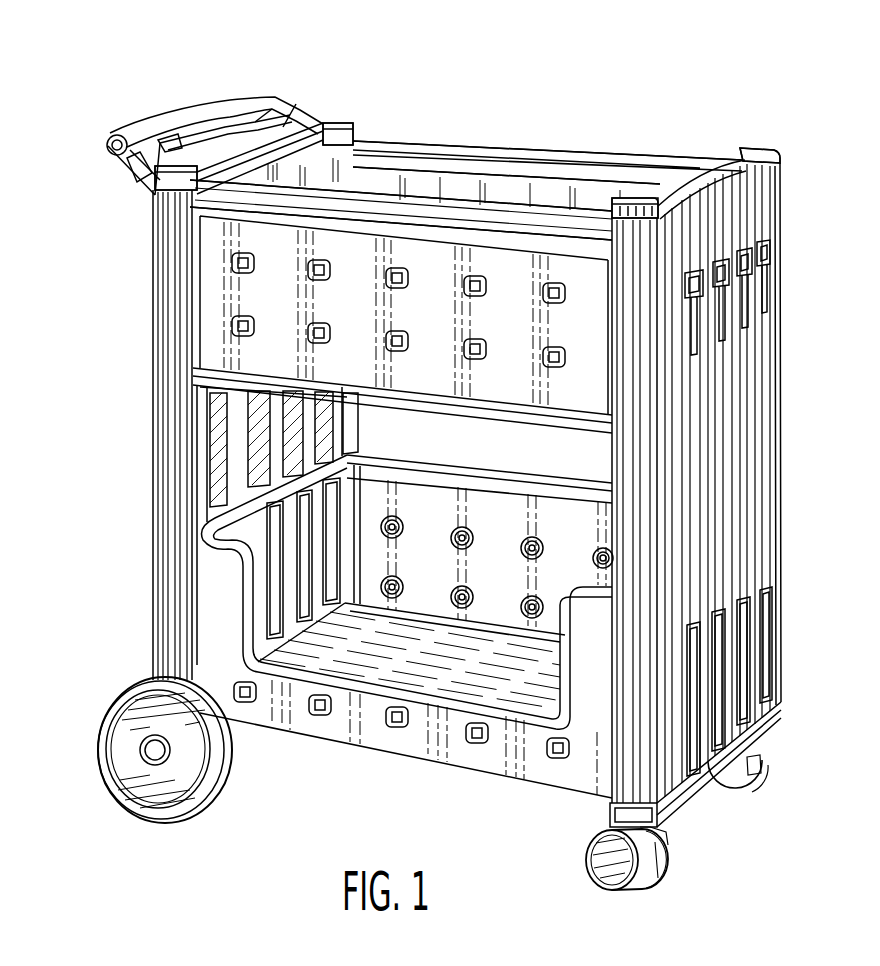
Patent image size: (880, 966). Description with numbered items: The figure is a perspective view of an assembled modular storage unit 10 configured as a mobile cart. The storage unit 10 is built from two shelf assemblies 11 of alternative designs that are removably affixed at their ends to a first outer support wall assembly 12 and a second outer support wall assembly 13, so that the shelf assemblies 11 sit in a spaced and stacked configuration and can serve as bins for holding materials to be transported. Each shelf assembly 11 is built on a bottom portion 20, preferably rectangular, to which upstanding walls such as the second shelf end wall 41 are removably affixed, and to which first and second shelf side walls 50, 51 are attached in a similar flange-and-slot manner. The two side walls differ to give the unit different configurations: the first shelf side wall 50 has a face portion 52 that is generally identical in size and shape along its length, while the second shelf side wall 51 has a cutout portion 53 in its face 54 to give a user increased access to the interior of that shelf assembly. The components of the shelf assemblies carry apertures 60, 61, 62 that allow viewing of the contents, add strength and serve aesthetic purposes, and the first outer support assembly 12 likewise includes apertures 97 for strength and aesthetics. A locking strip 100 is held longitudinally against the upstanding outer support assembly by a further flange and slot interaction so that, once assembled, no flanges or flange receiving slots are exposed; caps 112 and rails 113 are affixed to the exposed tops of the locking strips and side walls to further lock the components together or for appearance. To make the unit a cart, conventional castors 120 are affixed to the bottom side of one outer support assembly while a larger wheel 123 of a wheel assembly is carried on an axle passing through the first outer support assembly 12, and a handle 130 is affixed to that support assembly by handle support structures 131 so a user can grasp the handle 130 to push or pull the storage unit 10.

The storage unit 10 is at (578, 57).
The shelf assembly 11 is at (627, 147).
The first outer support wall assembly 12 is at (220, 396).
The second outer support wall assembly 13 is at (730, 226).
The bottom portion 20 is at (452, 670).
The second shelf end upstanding wall 41 is at (302, 172).
The first shelf side wall 50 is at (437, 178).
The second shelf side wall 51 is at (273, 297).
The face portion 52 is at (419, 312).
The cutout portion 53 is at (318, 683).
The face 54 is at (363, 742).
The apertures 60 is at (312, 265).
The apertures 61 is at (467, 528).
The apertures 62 is at (280, 563).
The apertures 97 is at (780, 680).
The locking strip 100 is at (170, 300).
The caps 112 is at (355, 128).
The rails 113 is at (459, 205).
The castors 120 is at (662, 867).
The wheel 123 is at (124, 753).
The handle 130 is at (204, 103).
The handle support structures 131 is at (278, 100).